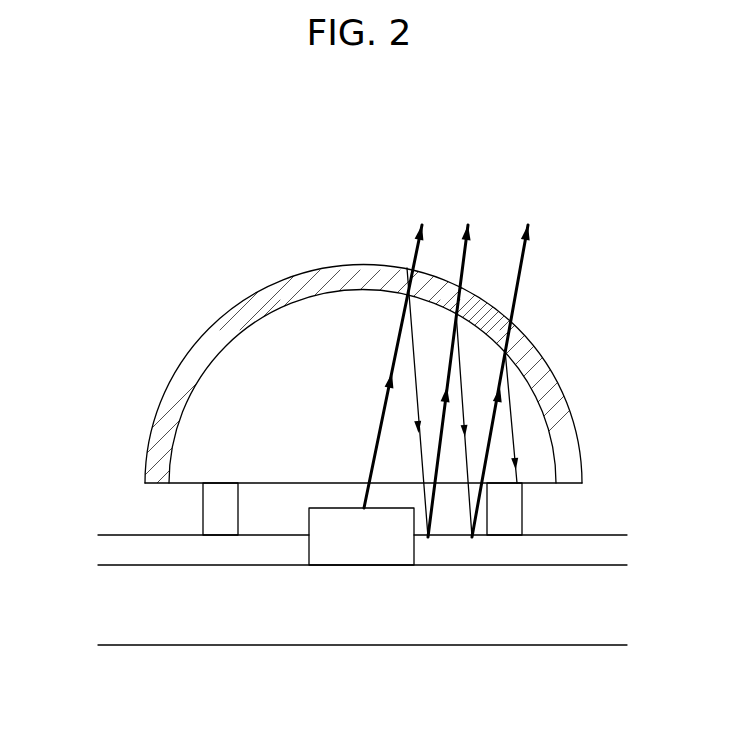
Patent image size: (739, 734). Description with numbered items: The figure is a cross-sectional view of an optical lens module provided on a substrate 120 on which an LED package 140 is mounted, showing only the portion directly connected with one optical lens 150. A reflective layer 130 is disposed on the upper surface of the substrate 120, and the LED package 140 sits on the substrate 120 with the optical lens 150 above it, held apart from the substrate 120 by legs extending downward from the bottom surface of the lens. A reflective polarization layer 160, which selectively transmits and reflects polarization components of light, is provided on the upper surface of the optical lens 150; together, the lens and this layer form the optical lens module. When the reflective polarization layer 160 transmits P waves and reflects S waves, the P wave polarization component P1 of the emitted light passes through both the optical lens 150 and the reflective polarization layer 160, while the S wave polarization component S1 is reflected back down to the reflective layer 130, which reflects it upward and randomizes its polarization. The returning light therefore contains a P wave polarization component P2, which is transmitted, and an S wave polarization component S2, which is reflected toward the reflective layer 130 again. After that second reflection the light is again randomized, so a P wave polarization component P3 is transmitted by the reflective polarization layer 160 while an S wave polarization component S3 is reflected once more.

The substrate 120 is at (232, 620).
The reflective layer 130 is at (162, 553).
The LED package 140 is at (322, 555).
The optical lens 150 is at (217, 430).
The reflective polarization layer 160 is at (172, 391).
The P wave polarization component P1 is at (396, 355).
The P wave polarization component P2 is at (459, 369).
The P wave polarization component P3 is at (511, 369).
The S wave polarization component S1 is at (422, 465).
The S wave polarization component S2 is at (470, 487).
The S wave polarization component S3 is at (517, 447).